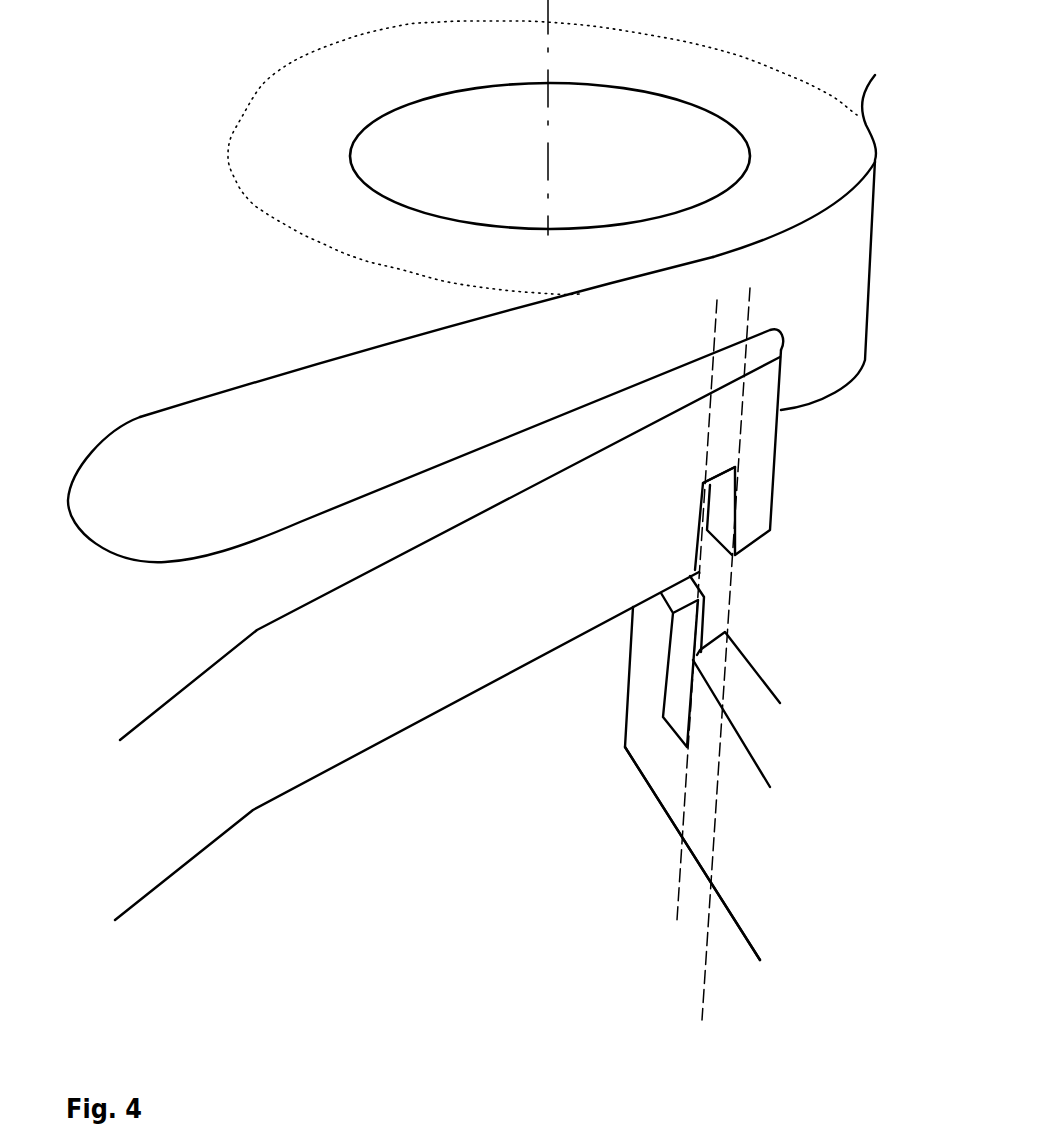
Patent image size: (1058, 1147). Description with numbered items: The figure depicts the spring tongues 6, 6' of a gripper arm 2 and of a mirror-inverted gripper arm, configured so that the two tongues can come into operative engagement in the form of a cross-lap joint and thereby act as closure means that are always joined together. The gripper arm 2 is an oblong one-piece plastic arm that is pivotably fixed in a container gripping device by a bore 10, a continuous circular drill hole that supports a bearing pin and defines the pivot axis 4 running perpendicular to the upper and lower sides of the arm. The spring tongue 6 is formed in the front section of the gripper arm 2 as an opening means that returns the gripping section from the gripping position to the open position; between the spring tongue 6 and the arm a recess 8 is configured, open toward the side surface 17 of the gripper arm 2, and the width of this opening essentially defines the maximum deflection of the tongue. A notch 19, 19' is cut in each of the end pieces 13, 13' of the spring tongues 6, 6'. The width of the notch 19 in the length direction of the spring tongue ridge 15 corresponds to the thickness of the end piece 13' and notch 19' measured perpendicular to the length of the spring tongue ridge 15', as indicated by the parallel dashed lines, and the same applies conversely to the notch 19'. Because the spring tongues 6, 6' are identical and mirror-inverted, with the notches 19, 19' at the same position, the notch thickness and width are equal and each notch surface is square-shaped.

The gripper arm 2 is at (228, 903).
The pivot axis 4 is at (545, 156).
The spring tongue 6 is at (407, 788).
The spring tongue of mirror-inverted gripper arm 6' is at (616, 928).
The recess for spring tongue 8 is at (158, 477).
The bore 10 is at (670, 127).
The end piece of spring tongue 13 is at (773, 460).
The end piece of mirror-inverted spring tongue 13' is at (657, 776).
The spring tongue ridge 15 is at (450, 639).
The spring tongue ridge of mirror-inverted spring tongue 15' is at (683, 677).
The side surface of gripper arm 17 is at (815, 311).
The notch of spring tongue 19 is at (772, 536).
The notch of mirror-inverted spring tongue 19' is at (681, 727).